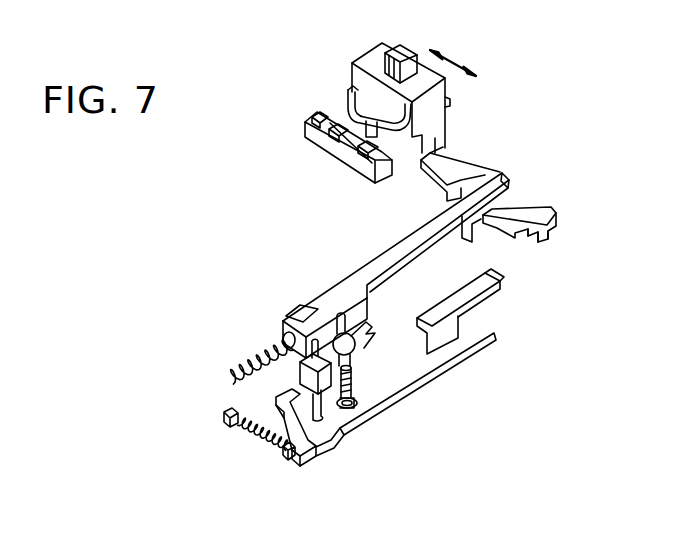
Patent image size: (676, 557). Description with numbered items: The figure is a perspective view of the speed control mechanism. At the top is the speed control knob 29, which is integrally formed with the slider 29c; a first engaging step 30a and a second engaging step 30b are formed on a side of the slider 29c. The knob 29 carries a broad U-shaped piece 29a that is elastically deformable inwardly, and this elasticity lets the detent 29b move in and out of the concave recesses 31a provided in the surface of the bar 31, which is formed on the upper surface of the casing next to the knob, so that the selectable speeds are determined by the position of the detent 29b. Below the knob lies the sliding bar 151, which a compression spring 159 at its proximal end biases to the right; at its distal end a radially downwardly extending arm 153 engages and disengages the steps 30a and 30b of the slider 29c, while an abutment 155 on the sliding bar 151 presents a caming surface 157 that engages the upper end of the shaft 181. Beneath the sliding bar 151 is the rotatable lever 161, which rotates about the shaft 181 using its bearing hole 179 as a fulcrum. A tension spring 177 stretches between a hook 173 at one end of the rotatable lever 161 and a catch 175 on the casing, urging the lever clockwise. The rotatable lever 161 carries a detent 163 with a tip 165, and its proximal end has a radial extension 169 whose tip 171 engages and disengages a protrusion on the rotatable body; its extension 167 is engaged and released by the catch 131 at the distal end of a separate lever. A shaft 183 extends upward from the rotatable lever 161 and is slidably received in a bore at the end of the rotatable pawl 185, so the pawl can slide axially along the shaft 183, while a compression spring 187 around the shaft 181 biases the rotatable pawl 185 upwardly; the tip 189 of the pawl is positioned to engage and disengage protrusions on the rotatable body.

The speed control knob 29 is at (407, 47).
The U-shaped piece 29a is at (349, 92).
The detent 29b is at (362, 125).
The slider 29c is at (468, 172).
The first engaging step 30a is at (518, 220).
The second engaging step 30b is at (492, 213).
The bar 31 is at (320, 138).
The concave recesses 31a is at (313, 135).
The catch 131 is at (376, 0).
The sliding bar 151 is at (388, 250).
The arm 153 is at (478, 230).
The abutment 155 is at (347, 282).
The caming surface 157 is at (293, 296).
The compression spring 159 is at (263, 352).
The rotatable lever 161 is at (427, 372).
The detent 163 is at (450, 298).
The tip 165 is at (492, 273).
The extension 167 is at (322, 472).
The radial extension 169 is at (290, 393).
The tip 171 is at (300, 375).
The hook 173 is at (283, 457).
The catch 175 is at (227, 417).
The tension spring 177 is at (257, 447).
The bearing hole 179 is at (357, 400).
The shaft 181 is at (350, 315).
The shaft 183 is at (340, 428).
The rotatable pawl 185 is at (352, 362).
The compression spring 187 is at (355, 368).
The tip 189 is at (357, 388).